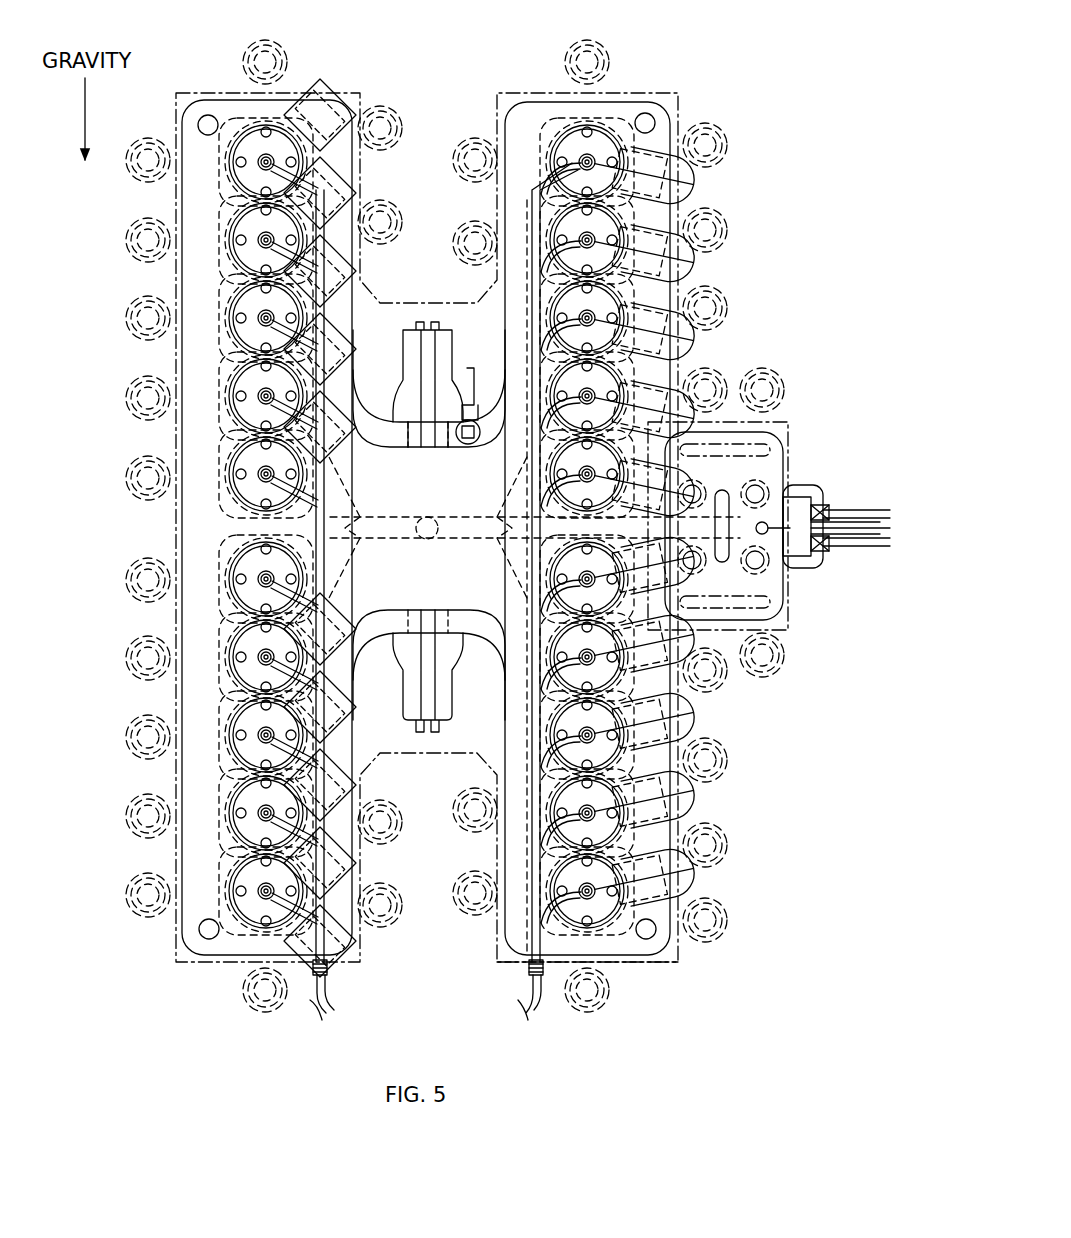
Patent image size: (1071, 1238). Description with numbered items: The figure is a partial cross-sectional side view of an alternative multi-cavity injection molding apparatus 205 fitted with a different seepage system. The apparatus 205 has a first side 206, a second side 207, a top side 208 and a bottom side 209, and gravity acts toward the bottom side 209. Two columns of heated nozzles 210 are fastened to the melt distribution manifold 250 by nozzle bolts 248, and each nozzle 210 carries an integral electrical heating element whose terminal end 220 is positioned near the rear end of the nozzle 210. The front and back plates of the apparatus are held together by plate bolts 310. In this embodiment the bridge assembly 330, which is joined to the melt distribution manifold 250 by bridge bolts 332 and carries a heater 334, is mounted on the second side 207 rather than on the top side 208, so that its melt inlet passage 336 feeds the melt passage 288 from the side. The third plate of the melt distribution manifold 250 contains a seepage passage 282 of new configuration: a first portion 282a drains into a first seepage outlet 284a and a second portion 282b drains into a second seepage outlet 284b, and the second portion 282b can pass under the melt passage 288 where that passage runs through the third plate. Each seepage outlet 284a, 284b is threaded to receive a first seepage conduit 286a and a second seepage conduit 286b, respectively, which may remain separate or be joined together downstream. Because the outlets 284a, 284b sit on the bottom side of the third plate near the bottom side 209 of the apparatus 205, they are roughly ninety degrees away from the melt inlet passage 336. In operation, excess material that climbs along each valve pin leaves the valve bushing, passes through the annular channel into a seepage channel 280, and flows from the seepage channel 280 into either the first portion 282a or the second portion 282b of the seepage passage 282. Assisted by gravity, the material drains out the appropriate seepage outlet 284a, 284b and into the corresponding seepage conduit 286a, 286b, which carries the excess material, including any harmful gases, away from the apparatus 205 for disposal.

The injection molding apparatus 205 is at (703, 56).
The first side 206 is at (168, 704).
The second side 207 is at (690, 283).
The top side 208 is at (520, 86).
The bottom side 209 is at (652, 970).
The nozzle 210 is at (258, 135).
The terminal end 220 is at (706, 172).
The nozzle bolt 248 is at (640, 745).
The melt distribution manifold 250 is at (192, 935).
The seepage channel 280 is at (268, 177).
The seepage passage 282 is at (306, 538).
The first portion of seepage passage 282a is at (316, 520).
The second portion of seepage passage 282b is at (533, 210).
The first seepage outlet 284a is at (330, 972).
The second seepage outlet 284b is at (530, 972).
The first seepage conduit 286a is at (323, 997).
The second seepage conduit 286b is at (536, 1000).
The melt passage 288 is at (672, 440).
The plate bolt 310 is at (368, 100).
The bridge assembly 330 is at (790, 597).
The bridge bolt 332 is at (757, 562).
The heater 334 is at (840, 510).
The melt inlet passage 336 is at (786, 516).